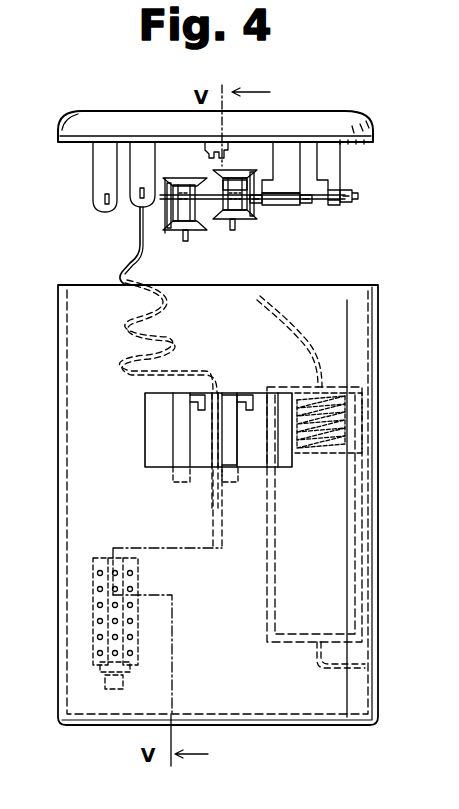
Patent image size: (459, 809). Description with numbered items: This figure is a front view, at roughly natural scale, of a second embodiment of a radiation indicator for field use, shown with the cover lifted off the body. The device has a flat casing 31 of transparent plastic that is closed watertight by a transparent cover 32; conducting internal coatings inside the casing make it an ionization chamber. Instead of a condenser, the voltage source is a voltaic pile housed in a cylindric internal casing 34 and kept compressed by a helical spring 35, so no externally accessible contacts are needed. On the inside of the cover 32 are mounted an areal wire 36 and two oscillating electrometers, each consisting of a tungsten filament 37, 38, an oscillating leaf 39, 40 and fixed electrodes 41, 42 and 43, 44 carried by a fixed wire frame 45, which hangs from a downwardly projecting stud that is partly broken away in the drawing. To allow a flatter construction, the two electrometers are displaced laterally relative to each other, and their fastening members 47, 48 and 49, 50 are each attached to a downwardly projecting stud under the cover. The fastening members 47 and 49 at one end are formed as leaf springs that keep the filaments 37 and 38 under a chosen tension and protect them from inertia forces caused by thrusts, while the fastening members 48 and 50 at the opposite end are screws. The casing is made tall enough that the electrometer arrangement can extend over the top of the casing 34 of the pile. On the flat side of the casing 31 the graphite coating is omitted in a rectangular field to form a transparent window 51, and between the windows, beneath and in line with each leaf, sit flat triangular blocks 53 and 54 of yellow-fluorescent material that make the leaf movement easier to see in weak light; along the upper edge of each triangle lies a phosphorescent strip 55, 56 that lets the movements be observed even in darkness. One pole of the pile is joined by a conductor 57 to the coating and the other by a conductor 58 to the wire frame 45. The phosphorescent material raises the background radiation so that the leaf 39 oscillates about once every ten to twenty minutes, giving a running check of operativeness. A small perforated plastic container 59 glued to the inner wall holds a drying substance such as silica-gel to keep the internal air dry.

The flat casing 31 is at (375, 546).
The transparent cover 32 is at (340, 128).
The cylindric internal casing 34 is at (257, 582).
The helical spring 35 is at (340, 417).
The areal wire 36 is at (131, 265).
The tungsten filament 37 is at (320, 197).
The tungsten filament 38 is at (270, 206).
The oscillating leaf 39 is at (236, 186).
The oscillating leaf 40 is at (183, 190).
The fixed electrode 41 is at (247, 178).
The fixed electrode 42 is at (251, 214).
The fixed electrode 43 is at (167, 182).
The fixed electrode 44 is at (170, 231).
The fixed wire frame 45 is at (186, 240).
The fastening member 47 is at (138, 211).
The fastening member 48 is at (350, 198).
The fastening member 49 is at (96, 208).
The fastening member 50 is at (303, 205).
The transparent window 51 is at (160, 444).
The flat triangular block 53 is at (237, 453).
The flat triangular block 54 is at (178, 421).
The phosphorescent strip 55 is at (248, 398).
The phosphorescent strip 56 is at (198, 397).
The conductor 57 is at (318, 667).
The conductor 58 is at (284, 324).
The plastic container 59 is at (133, 608).